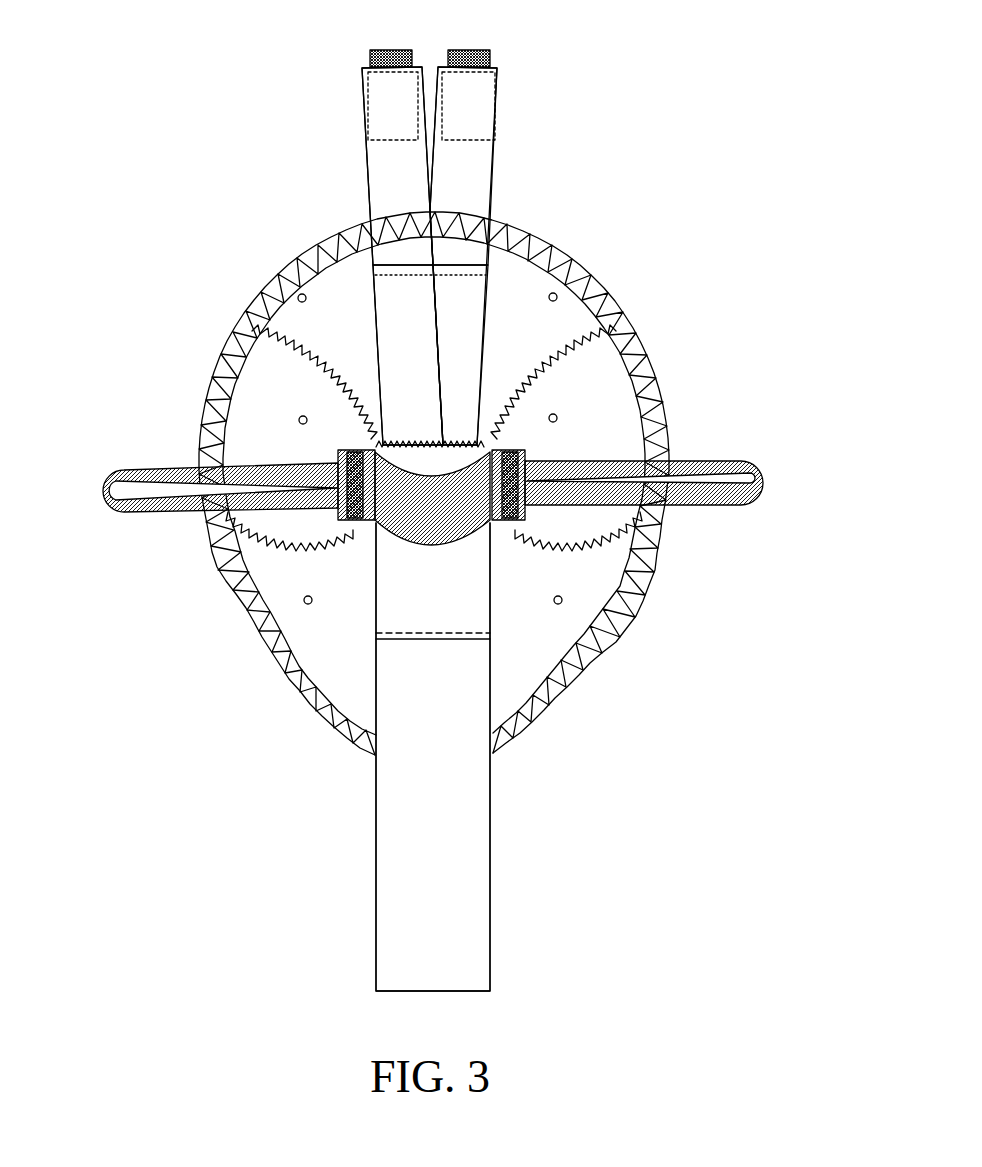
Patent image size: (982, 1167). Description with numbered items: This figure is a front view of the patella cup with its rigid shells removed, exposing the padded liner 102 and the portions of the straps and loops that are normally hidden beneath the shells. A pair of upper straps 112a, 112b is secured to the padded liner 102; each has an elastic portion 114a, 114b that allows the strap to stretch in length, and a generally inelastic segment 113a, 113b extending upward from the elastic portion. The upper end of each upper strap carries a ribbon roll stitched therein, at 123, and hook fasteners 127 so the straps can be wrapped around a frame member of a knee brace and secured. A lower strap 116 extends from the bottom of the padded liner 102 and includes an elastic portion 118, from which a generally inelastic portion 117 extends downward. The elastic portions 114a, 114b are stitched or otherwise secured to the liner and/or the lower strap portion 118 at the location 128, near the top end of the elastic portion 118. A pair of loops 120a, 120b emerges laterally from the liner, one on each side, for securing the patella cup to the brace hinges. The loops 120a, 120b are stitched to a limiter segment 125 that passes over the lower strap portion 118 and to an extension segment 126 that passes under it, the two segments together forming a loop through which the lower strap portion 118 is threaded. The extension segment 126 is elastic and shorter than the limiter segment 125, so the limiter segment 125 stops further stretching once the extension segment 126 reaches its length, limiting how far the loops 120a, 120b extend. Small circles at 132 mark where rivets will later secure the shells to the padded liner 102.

The padded liner 102 is at (623, 387).
The upper strap 112a is at (533, 182).
The upper strap 112b is at (368, 190).
The inelastic segment 113a is at (478, 148).
The inelastic segment 113b is at (376, 150).
The elastic portion 114a is at (452, 302).
The elastic portion 114b is at (395, 326).
The lower strap 116 is at (497, 912).
The inelastic portion 117 is at (415, 917).
The elastic portion 118 is at (390, 617).
The loop 120a is at (732, 462).
The loop 120b is at (140, 470).
The ribbon roll 123 is at (395, 50).
The limiter segment 125 is at (397, 523).
The extension segment 126 is at (362, 447).
The hook fasteners 127 is at (395, 105).
The location 128 is at (415, 445).
The rivet locations 132 is at (302, 294).